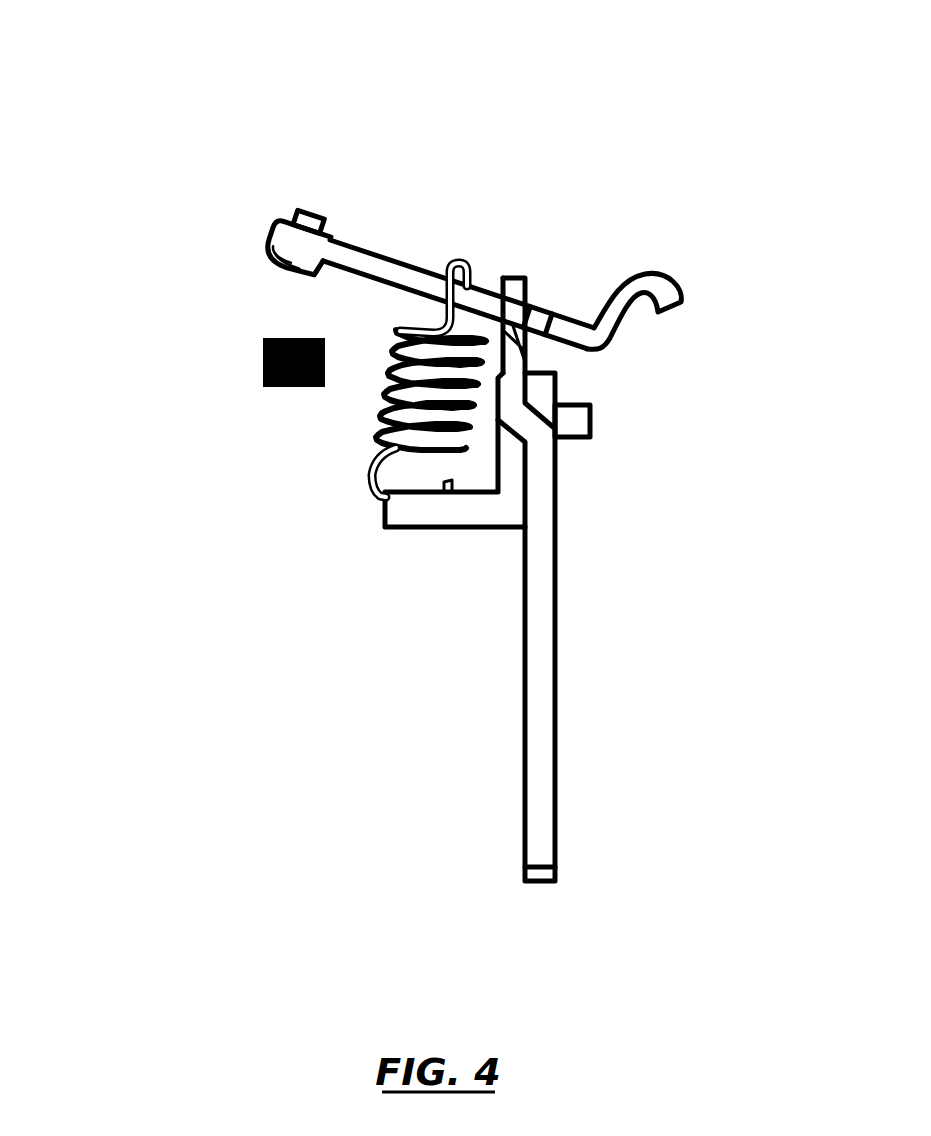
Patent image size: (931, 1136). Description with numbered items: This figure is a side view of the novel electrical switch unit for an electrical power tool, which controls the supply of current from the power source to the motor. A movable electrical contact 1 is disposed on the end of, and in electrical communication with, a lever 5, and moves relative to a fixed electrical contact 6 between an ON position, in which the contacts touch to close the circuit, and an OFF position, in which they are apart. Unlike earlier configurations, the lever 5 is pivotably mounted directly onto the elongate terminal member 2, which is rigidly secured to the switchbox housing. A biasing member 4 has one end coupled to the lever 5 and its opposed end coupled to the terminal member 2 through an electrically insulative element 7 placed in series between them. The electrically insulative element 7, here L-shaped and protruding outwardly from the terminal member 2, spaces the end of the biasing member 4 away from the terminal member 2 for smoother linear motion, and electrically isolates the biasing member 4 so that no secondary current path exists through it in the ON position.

The movable electrical contact 1 is at (300, 239).
The terminal member 2 is at (540, 570).
The biasing member 4 is at (398, 381).
The lever 5 is at (410, 282).
The fixed electrical contact 6 is at (258, 340).
The electrically insulative element 7 is at (455, 524).